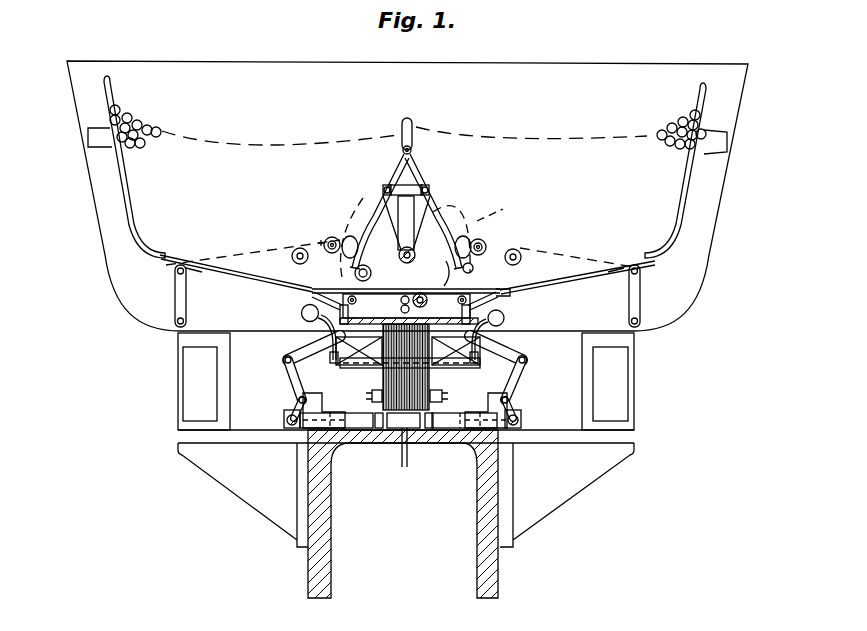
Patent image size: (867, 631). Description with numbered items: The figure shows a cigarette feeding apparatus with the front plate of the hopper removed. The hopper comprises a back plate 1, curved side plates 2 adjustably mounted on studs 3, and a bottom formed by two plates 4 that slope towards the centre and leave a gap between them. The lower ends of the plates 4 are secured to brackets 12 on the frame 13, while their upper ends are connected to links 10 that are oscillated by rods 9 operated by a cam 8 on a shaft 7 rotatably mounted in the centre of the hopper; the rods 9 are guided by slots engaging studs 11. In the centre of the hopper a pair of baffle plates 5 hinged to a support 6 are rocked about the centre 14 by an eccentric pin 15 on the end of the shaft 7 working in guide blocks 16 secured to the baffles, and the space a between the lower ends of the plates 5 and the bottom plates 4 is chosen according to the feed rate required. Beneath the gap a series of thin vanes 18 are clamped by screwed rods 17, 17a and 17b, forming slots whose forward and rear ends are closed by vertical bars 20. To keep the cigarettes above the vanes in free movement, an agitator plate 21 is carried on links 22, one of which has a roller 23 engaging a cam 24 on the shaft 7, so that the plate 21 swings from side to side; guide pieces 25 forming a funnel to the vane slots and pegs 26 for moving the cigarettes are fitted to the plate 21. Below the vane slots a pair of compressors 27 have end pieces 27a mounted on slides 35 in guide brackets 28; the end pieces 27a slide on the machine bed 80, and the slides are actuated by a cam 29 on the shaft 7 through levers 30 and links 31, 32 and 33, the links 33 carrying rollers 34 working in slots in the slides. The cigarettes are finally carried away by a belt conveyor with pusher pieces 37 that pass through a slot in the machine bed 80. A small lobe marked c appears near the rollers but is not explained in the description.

The back plate 1 is at (80, 107).
The curved side plates 2 is at (114, 168).
The studs 3 is at (96, 140).
The bottom plates 4 is at (266, 279).
The baffle plates 5 is at (372, 219).
The support 6 is at (413, 141).
The shaft 7 is at (406, 223).
The cam 8 is at (370, 200).
The rods 9 is at (260, 254).
The links 10 is at (173, 298).
The studs 11 is at (299, 249).
The brackets 12 is at (498, 297).
The frame 13 is at (456, 351).
The centre 14 is at (417, 150).
The eccentric pin 15 is at (409, 262).
The guide blocks 16 is at (384, 192).
The screwed rod 17 is at (348, 368).
The screwed rod 17a is at (380, 335).
The screwed rod 17b is at (440, 391).
The vanes 18 is at (418, 370).
The vertical bars 20 is at (382, 386).
The plate 21 is at (316, 305).
The links 22 is at (470, 269).
The roller 23 is at (366, 267).
The cam 24 is at (443, 210).
The guide pieces 25 is at (378, 264).
The pegs 26 is at (402, 303).
The compressors 27 is at (360, 429).
The end pieces 27a is at (432, 429).
The guide brackets 28 is at (324, 401).
The cam 29 is at (500, 215).
The levers 30 is at (505, 316).
The links 31 is at (312, 357).
The links 32 is at (290, 383).
The links 33 is at (513, 405).
The rollers 34 is at (517, 433).
The slides 35 is at (284, 417).
The pusher pieces 37 is at (397, 429).
The machine bed 80 is at (482, 462).
The space a is at (440, 273).
The lobe c is at (406, 247).